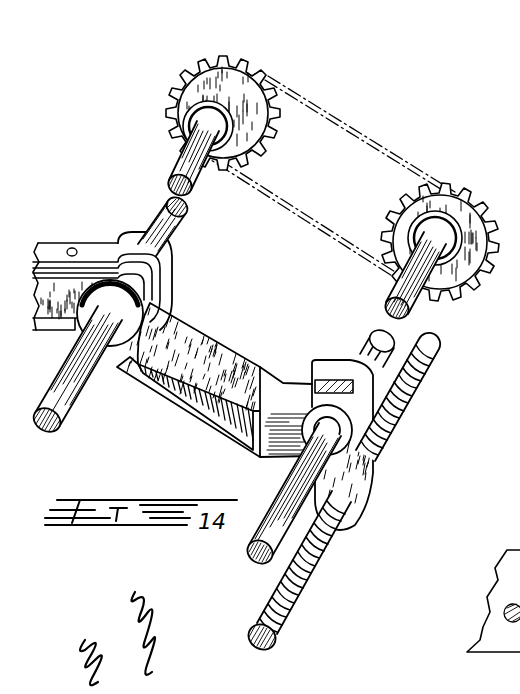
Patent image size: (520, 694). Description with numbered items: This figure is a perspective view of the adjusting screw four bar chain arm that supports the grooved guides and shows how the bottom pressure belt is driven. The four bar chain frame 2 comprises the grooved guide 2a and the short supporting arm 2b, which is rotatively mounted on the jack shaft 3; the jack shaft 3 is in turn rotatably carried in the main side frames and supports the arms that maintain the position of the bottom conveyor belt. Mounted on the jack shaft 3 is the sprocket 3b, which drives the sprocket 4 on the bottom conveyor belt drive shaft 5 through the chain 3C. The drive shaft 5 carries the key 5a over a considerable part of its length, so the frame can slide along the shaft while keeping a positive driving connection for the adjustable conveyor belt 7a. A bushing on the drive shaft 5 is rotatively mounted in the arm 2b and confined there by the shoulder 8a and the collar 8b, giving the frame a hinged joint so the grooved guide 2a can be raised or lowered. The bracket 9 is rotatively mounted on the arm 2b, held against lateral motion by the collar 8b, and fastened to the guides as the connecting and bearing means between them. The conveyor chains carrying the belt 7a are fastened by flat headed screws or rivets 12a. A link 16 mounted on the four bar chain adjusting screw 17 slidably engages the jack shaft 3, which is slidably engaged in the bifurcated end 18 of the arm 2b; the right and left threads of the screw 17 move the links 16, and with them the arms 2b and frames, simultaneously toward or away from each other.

The four bar chain frame 2 is at (63, 310).
The grooved guide 2a is at (43, 278).
The short supporting arm 2b is at (227, 360).
The jack shaft 3 is at (433, 301).
The sprocket 3b is at (453, 207).
The chain 3C is at (380, 141).
The sprocket 4 is at (270, 85).
The bottom conveyor belt drive shaft 5 is at (193, 170).
The key 5a is at (180, 219).
The adjustable conveyor belt 7a is at (93, 248).
The shoulder 8a is at (172, 257).
The collar 8b is at (130, 330).
The bracket 9 is at (67, 337).
The flat headed screw or rivet 12a is at (74, 248).
The link 16 is at (370, 443).
The four bar chain adjusting screw 17 is at (418, 387).
The bifurcated end 18 is at (332, 373).